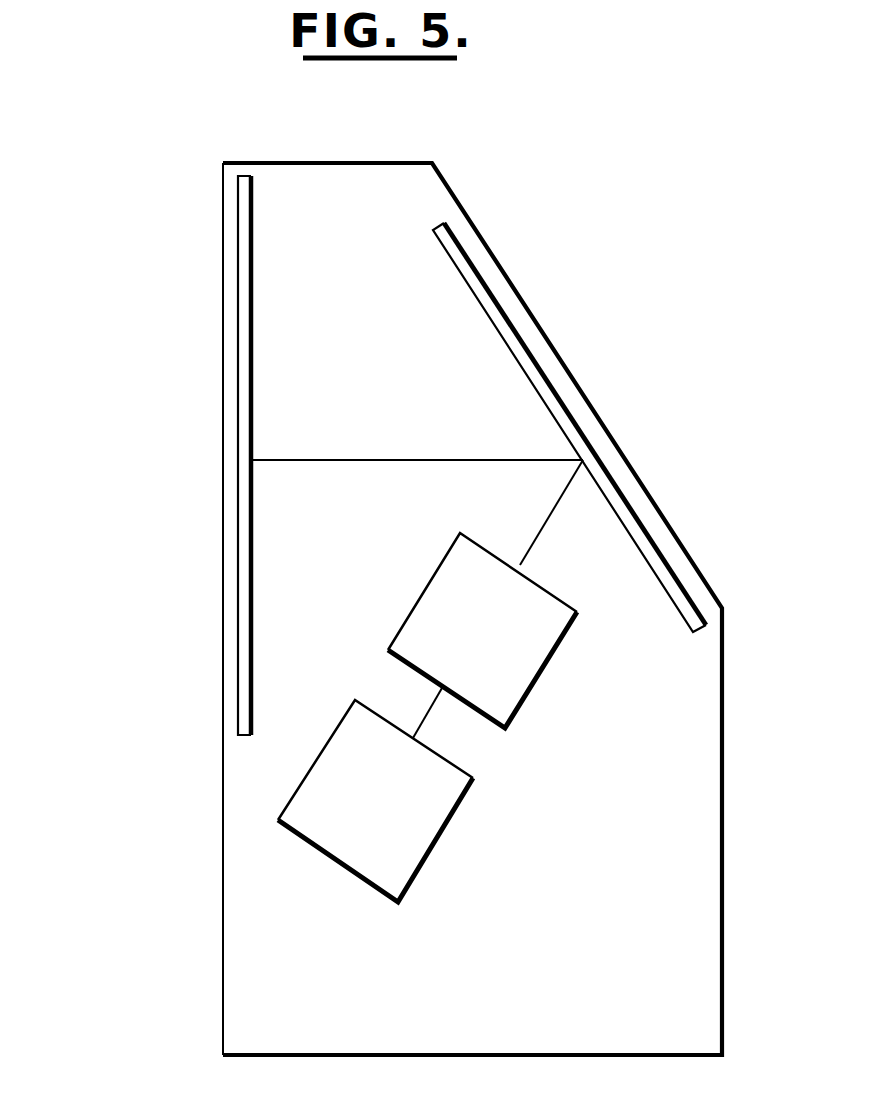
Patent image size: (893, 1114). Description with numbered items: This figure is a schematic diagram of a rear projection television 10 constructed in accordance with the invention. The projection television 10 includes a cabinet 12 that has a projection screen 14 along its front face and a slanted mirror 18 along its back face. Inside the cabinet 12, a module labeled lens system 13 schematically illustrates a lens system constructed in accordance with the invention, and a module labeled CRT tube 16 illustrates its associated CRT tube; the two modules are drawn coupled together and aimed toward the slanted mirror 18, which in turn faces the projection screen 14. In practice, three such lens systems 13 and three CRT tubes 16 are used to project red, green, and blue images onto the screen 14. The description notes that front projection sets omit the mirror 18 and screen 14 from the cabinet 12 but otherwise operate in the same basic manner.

The rear projection television 10 is at (148, 682).
The cabinet 12 is at (722, 800).
The lens system 13 is at (541, 676).
The projection screen 14 is at (253, 308).
The CRT tube 16 is at (440, 843).
The slanted mirror 18 is at (483, 312).